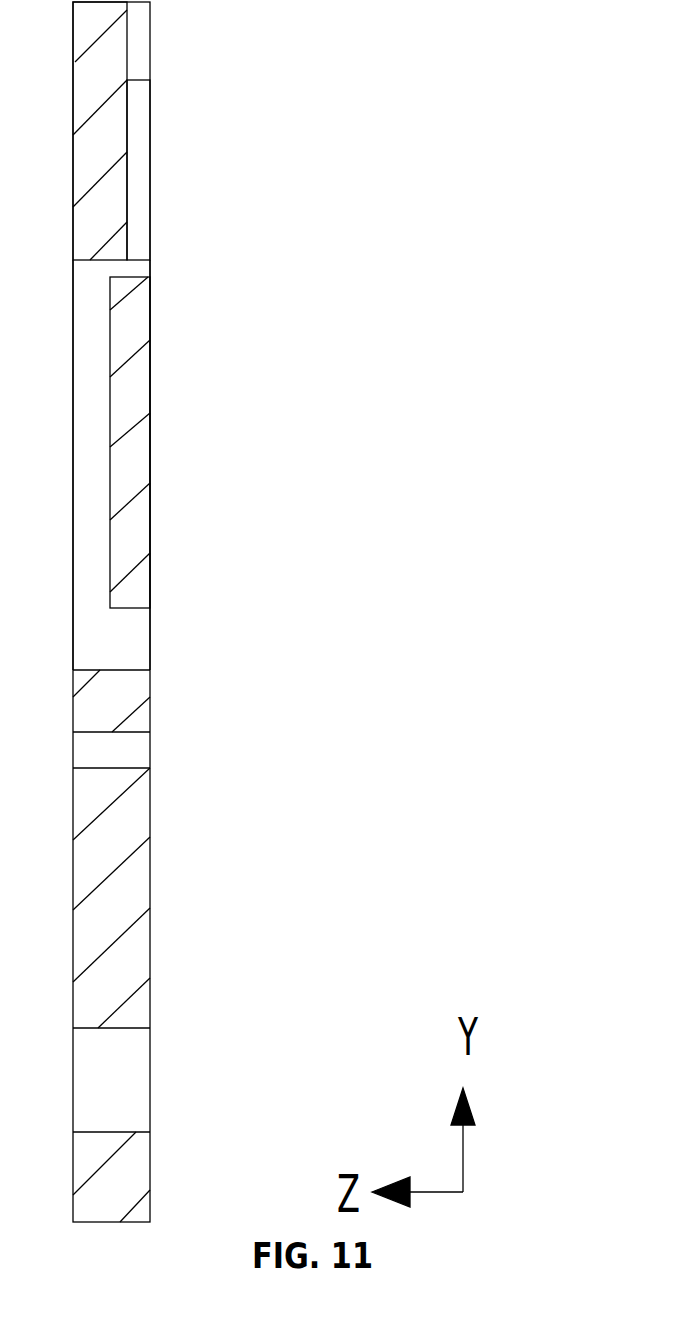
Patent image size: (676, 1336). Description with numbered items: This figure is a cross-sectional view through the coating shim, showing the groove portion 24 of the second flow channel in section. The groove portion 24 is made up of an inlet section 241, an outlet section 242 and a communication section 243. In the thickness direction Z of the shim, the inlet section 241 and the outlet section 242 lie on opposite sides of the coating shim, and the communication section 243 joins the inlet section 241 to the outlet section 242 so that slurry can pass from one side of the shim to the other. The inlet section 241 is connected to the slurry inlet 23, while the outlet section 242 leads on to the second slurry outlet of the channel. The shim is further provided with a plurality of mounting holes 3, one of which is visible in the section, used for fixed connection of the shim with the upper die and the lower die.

The mounting hole 3 is at (130, 1083).
The slurry inlet 23 is at (128, 638).
The groove portion 24 is at (428, 103).
The inlet section 241 is at (92, 447).
The outlet section 242 is at (142, 188).
The communication section 243 is at (113, 268).